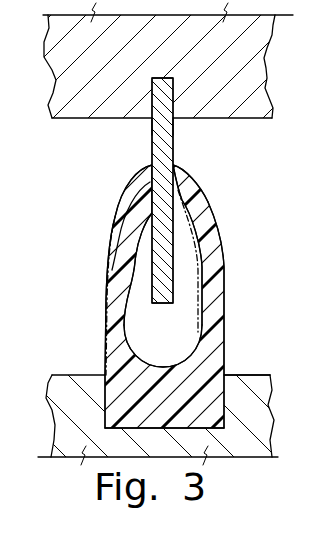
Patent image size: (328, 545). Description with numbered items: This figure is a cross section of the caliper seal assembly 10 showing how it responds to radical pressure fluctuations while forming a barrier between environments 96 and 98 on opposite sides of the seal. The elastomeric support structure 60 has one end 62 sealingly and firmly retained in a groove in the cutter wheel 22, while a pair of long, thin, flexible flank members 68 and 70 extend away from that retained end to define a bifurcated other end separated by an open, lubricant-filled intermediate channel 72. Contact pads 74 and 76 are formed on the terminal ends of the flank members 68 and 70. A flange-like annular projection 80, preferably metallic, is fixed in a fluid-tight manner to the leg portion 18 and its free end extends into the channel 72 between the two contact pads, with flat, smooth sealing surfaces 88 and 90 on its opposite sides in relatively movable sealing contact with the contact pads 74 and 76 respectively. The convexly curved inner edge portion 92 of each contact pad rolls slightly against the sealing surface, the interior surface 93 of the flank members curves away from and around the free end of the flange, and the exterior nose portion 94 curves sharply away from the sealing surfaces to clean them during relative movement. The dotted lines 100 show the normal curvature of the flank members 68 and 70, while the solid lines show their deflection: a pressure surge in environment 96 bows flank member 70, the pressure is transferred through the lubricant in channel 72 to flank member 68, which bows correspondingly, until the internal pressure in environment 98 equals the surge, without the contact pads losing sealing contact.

The caliper seal assembly 10 is at (164, 290).
The leg portion 18 is at (252, 68).
The cutter wheel 22 is at (258, 448).
The support structure 60 is at (125, 393).
The end of support structure 62 is at (210, 404).
The flank member 68 is at (213, 286).
The flank member 70 is at (118, 340).
The intermediate channel 72 is at (180, 352).
The contact pad sealing surface 74 is at (180, 182).
The contact pad sealing surface 76 is at (150, 183).
The flange-like annular projection 80 is at (163, 85).
The sealing surface 88 is at (175, 130).
The sealing surface 90 is at (150, 132).
The inner edge portion 92 is at (150, 216).
The interior surface 93 is at (195, 322).
The exterior surface portion 94 is at (150, 166).
The environment 96 is at (63, 226).
The environment 98 is at (272, 211).
The dotted lines 100 is at (105, 298).